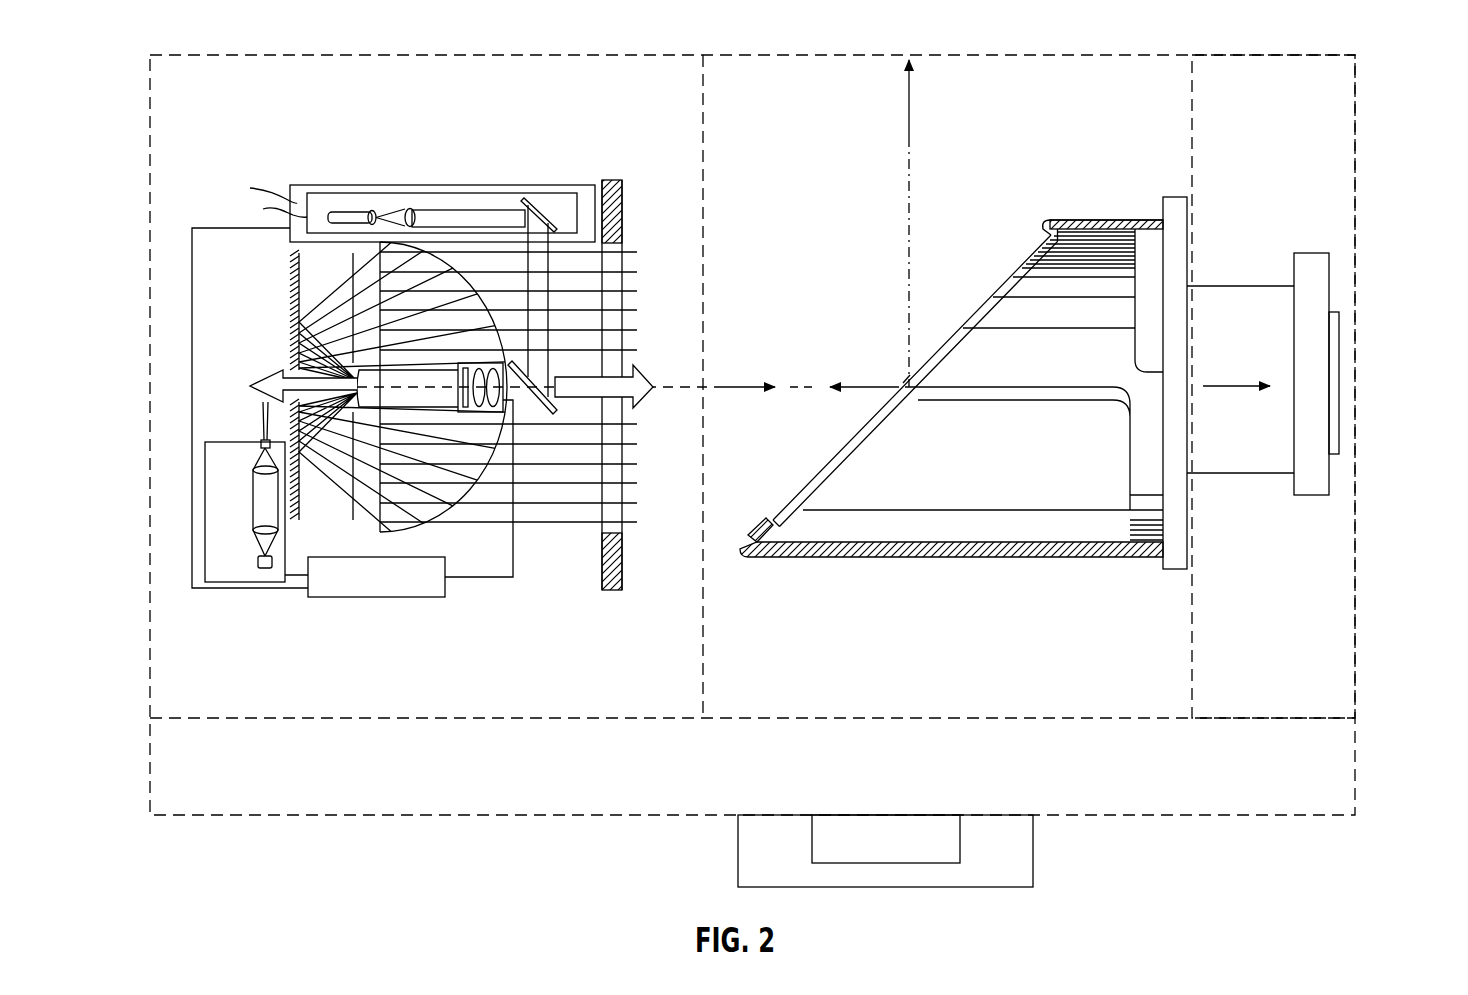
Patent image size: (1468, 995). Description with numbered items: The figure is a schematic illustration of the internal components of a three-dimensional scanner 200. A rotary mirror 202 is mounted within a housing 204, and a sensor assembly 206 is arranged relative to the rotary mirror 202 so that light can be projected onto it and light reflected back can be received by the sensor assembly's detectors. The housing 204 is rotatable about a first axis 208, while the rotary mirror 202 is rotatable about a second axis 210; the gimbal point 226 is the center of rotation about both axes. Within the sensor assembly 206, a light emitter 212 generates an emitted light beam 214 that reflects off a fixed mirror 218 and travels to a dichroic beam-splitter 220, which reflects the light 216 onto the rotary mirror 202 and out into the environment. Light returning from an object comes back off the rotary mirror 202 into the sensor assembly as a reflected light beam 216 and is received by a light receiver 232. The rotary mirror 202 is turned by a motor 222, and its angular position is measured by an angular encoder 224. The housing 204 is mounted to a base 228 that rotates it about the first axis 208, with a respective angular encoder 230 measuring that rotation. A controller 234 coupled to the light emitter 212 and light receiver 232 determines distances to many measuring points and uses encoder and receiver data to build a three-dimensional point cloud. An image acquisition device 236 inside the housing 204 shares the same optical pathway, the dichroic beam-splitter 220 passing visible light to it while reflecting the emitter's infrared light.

The 3D scanner 200 is at (1380, 96).
The rotary mirror 202 is at (1017, 285).
The housing 204 is at (1357, 188).
The sensor assembly 206 is at (193, 137).
The first axis 208 is at (912, 105).
The second axis 210 is at (1230, 384).
The light emitter 212 is at (350, 210).
The emitted light beam 214 is at (755, 385).
The reflected light beam 216 is at (538, 305).
The fixed mirror 218 is at (545, 208).
The dichroic beam-splitter 220 is at (560, 412).
The motor 222 is at (1310, 498).
The angular encoder 224 is at (1340, 352).
The gimbal point 226 is at (908, 380).
The base 228 is at (1025, 853).
The angular encoder 230 is at (878, 820).
The light receiver 232 is at (212, 507).
The controller 234 is at (375, 597).
The image acquisition device 236 is at (488, 413).